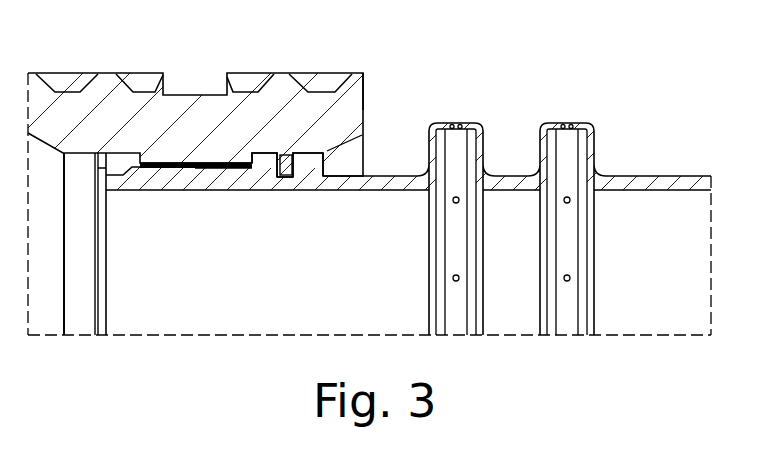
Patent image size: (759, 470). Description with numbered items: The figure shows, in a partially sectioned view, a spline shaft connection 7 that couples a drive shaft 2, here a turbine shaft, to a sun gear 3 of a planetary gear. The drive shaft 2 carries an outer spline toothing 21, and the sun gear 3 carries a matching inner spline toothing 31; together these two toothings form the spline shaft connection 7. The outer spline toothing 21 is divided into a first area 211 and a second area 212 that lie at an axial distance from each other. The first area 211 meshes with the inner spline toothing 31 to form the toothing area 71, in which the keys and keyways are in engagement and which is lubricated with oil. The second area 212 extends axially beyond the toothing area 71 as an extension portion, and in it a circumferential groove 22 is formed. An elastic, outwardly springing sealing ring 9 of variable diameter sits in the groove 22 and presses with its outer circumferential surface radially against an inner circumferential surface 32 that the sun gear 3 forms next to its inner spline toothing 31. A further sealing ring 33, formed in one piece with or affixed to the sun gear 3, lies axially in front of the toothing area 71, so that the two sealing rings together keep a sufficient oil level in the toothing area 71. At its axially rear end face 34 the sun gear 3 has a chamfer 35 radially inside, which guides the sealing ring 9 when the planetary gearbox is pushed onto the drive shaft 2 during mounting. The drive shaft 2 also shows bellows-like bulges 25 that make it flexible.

The drive shaft 2 is at (657, 177).
The rib of the profile 25 is at (583, 122).
The sun gear 3 is at (278, 95).
The axially rear end face 34 is at (363, 86).
The chamfer 35 is at (328, 150).
The sealing ring 33 is at (99, 157).
The outer spline toothing 21 is at (190, 180).
The first area 211 is at (155, 180).
The spline shaft connection 7 is at (164, 158).
The toothing area 71 is at (208, 158).
The inner spline toothing 31 is at (222, 180).
The inner circumferential surface 32 is at (265, 178).
The groove 22 is at (288, 176).
The second area 212 is at (303, 178).
The sealing ring 9 is at (293, 170).